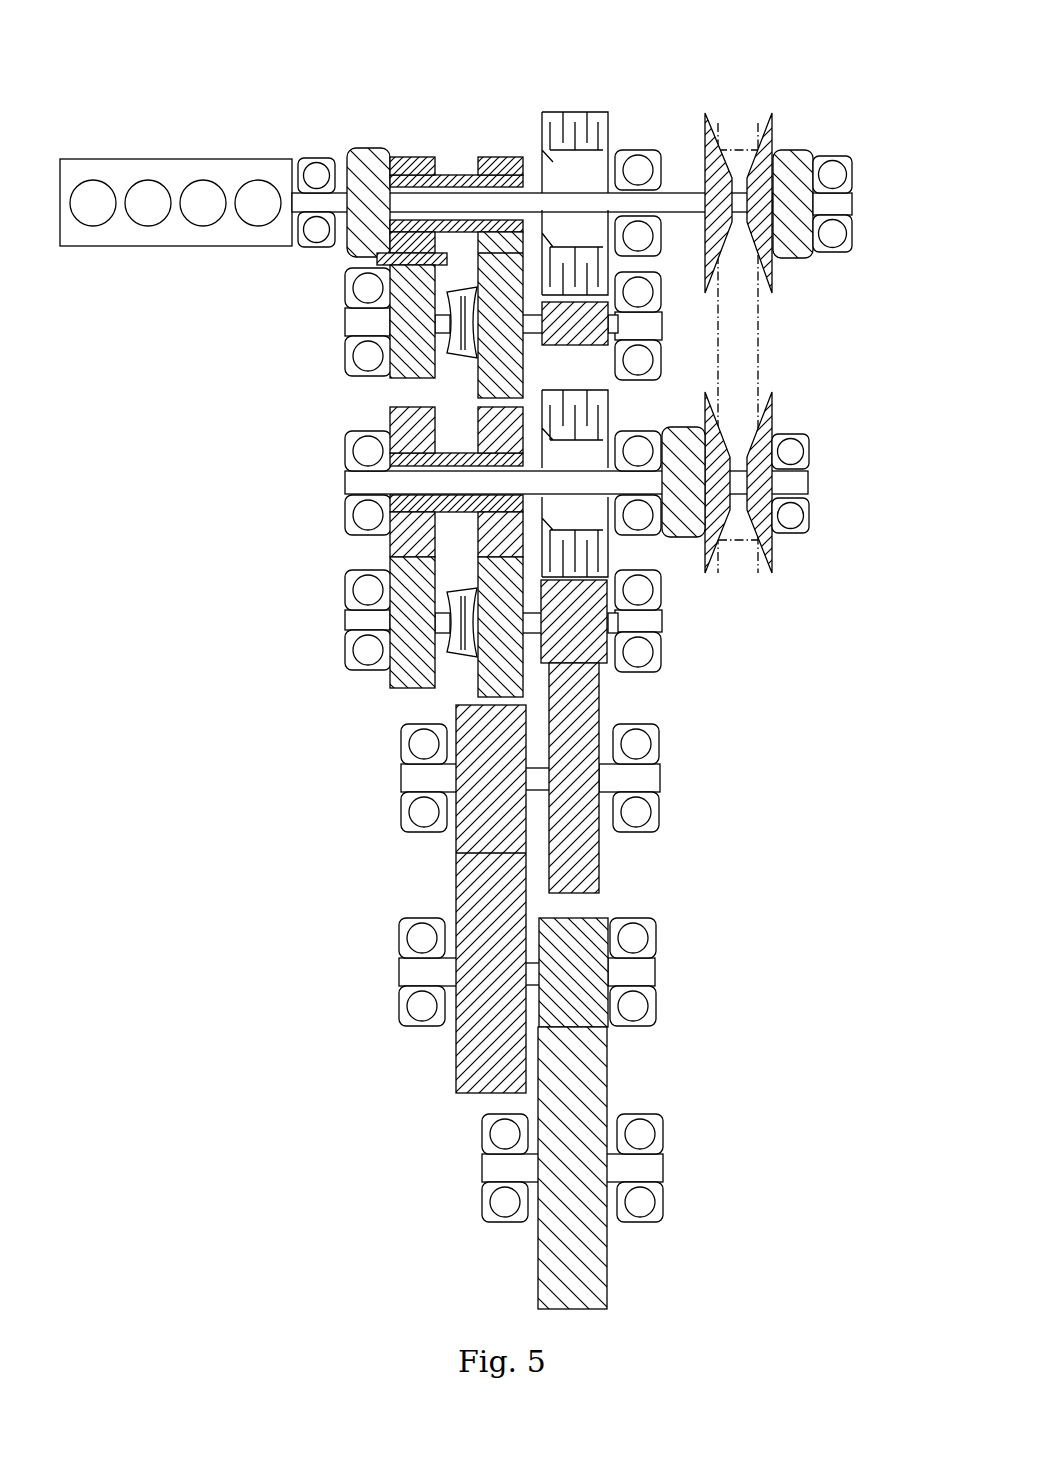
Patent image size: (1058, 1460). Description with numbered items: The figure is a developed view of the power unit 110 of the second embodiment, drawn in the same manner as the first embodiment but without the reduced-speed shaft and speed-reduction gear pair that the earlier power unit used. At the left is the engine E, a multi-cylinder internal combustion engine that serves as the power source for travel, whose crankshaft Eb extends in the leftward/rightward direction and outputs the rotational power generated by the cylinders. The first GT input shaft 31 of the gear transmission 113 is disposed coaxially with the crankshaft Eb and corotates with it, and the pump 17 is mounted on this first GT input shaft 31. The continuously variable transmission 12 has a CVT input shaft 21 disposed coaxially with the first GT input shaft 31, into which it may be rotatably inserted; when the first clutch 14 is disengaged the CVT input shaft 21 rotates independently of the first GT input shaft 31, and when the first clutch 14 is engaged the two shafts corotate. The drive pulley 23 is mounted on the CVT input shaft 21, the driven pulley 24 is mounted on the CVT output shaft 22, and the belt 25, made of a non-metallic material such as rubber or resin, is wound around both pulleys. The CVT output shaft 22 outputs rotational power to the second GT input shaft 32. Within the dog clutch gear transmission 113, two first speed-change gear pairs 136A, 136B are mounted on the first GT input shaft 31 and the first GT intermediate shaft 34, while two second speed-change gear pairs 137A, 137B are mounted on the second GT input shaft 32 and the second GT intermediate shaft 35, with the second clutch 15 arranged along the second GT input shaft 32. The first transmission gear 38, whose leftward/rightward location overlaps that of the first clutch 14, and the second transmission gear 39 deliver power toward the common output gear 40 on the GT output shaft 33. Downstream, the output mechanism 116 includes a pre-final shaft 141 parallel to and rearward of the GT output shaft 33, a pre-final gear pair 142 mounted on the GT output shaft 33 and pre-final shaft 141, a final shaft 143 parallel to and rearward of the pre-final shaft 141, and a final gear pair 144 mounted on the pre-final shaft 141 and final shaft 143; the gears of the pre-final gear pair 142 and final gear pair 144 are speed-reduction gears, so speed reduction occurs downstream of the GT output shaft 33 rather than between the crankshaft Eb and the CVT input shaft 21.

The engine E is at (213, 148).
The crankshaft Eb is at (320, 202).
The pump 17 is at (373, 152).
The first speed-change gear pair 136B is at (415, 157).
The first GT input shaft 31 is at (458, 200).
The first speed-change gear pair 136A is at (502, 157).
The first clutch 14 is at (578, 112).
The drive pulley 23 is at (770, 113).
The power unit 110 is at (845, 98).
The continuously variable transmission 12 is at (849, 140).
The CVT input shaft 21 is at (852, 205).
The first GT intermediate shaft 34 is at (355, 320).
The first transmission gear 38 is at (597, 310).
The belt 25 is at (758, 355).
The second GT input shaft 32 is at (353, 484).
The second speed-change gear pair 137B is at (413, 535).
The second GT intermediate shaft 35 is at (353, 618).
The CVT output shaft 22 is at (808, 485).
The second clutch 15 is at (612, 550).
The second transmission gear 39 is at (600, 652).
The driven pulley 24 is at (772, 575).
The second speed-change gear pair 137A is at (470, 656).
The gear transmission 113 is at (248, 755).
The GT output shaft 33 is at (408, 778).
The output mechanism 116 is at (404, 890).
The common output gear 40 is at (595, 857).
The pre-final shaft 141 is at (643, 975).
The pre-final gear pair 142 is at (467, 1053).
The final shaft 143 is at (653, 1168).
The final gear pair 144 is at (547, 1270).